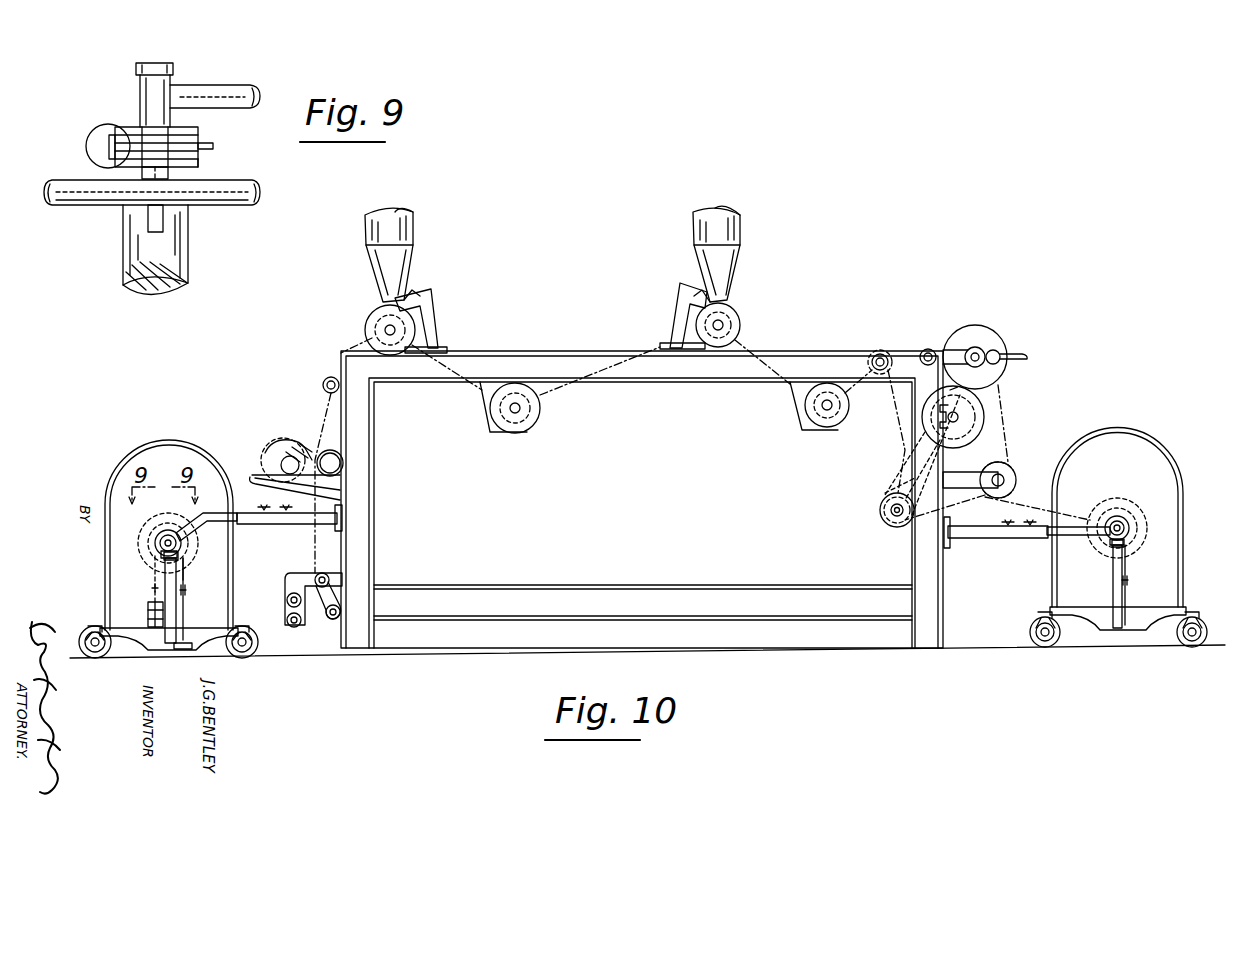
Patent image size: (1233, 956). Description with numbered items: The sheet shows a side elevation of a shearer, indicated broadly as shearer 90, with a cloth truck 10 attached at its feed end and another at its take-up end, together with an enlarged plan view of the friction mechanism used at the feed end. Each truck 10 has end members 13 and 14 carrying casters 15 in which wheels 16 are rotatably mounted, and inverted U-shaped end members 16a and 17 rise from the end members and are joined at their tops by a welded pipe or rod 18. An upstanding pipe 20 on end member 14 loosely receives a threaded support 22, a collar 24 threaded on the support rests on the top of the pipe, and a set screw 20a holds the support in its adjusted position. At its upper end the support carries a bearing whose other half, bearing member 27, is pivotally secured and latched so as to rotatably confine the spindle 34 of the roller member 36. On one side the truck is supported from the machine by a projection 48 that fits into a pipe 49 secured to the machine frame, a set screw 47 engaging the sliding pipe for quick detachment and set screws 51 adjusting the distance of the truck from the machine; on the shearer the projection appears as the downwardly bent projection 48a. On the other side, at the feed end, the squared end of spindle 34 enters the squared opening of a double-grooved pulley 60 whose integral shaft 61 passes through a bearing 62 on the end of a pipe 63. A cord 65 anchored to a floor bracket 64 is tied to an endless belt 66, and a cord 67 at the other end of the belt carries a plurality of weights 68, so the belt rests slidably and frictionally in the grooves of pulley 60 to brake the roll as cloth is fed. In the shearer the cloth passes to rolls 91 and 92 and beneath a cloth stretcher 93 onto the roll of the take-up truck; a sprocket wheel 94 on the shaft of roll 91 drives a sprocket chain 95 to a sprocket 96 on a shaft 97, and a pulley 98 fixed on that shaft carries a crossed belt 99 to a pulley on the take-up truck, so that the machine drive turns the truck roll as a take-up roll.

In FIG. 10, the truck 10 is at (173, 433).
In FIG. 9, the end member 13 is at (256, 182).
In FIG. 10, the end member 14 is at (108, 628).
In FIG. 10, the caster 15 is at (108, 636).
In FIG. 10, the wheel 16 is at (90, 628).
In FIG. 9, the inverted U-shaped end member 16a is at (110, 201).
In FIG. 10, the inverted U-shaped end member 17 is at (222, 440).
In FIG. 9, the pipe or rod 18 is at (152, 226).
In FIG. 10, the upstanding pipe 20 is at (178, 620).
In FIG. 10, the set screw 20a is at (186, 594).
In FIG. 10, the threaded support 22 is at (178, 550).
In FIG. 10, the collar 24 is at (178, 566).
In FIG. 9, the bearing member 27 is at (142, 175).
In FIG. 9, the spindle 34 is at (175, 170).
In FIG. 9, the roller member 36 is at (196, 255).
In FIG. 10, the roller member 36 is at (150, 548).
In FIG. 10, the set screw 47 is at (158, 538).
In FIG. 10, the projection 48 is at (1062, 536).
In FIG. 10, the bent projection 48a is at (208, 519).
In FIG. 10, the pipe 49 is at (300, 524).
In FIG. 10, the set screw 51 is at (282, 504).
In FIG. 9, the pulley 60 is at (198, 131).
In FIG. 10, the pulley 60 is at (168, 530).
In FIG. 9, the shaft 61 is at (160, 63).
In FIG. 9, the bearing 62 is at (140, 94).
In FIG. 9, the pipe 63 is at (205, 86).
In FIG. 9, the bracket 64 is at (213, 146).
In FIG. 10, the bracket 64 is at (196, 646).
In FIG. 10, the cord 65 is at (186, 576).
In FIG. 9, the endless belt 66 is at (198, 160).
In FIG. 10, the cord 67 is at (155, 575).
In FIG. 9, the weights 68 is at (95, 148).
In FIG. 10, the weights 68 is at (148, 606).
In FIG. 10, the shearer 90 is at (385, 535).
In FIG. 10, the roll 91 is at (985, 397).
In FIG. 10, the roll 92 is at (980, 335).
In FIG. 10, the cloth stretcher 93 is at (1028, 460).
In FIG. 10, the sprocket wheel 94 is at (985, 417).
In FIG. 10, the sprocket chain 95 is at (905, 462).
In FIG. 10, the sprocket 96 is at (884, 494).
In FIG. 10, the shaft 97 is at (892, 518).
In FIG. 10, the pulley 98 is at (880, 510).
In FIG. 10, the crossed belt 99 is at (984, 508).